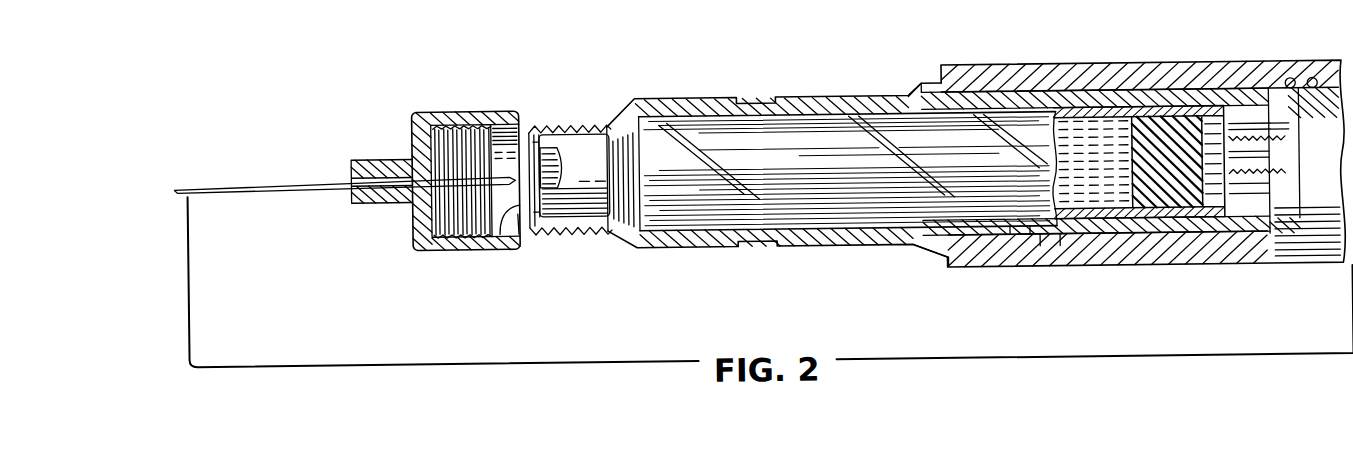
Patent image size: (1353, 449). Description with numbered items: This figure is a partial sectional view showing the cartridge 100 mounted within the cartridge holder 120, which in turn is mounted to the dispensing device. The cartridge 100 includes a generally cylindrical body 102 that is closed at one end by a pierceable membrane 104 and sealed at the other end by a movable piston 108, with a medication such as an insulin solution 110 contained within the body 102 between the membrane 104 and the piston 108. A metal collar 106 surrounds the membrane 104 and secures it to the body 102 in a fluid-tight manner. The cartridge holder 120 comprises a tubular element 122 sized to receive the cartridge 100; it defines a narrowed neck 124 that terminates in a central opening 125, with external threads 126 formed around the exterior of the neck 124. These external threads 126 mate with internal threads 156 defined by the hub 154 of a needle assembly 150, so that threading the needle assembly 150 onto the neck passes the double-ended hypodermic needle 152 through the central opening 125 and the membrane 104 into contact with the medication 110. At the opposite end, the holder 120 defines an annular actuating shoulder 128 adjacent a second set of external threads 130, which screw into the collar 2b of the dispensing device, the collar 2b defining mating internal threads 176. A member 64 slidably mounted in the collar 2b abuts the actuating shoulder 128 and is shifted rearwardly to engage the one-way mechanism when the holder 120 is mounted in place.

The double-ended hypodermic needle 152 is at (257, 179).
The needle assembly 150 is at (374, 202).
The hub 154 is at (413, 133).
The internal threads 156 is at (465, 122).
The central opening 125 is at (516, 194).
The external threads 126 is at (558, 234).
The narrowed neck 124 is at (596, 232).
The collar 106 is at (590, 142).
The pierceable membrane 104 is at (552, 138).
The tubular element 122 is at (695, 242).
The body 102 is at (706, 124).
The cartridge 100 is at (900, 172).
The cartridge holder 120 is at (837, 94).
The collar 2b is at (975, 70).
The annular actuating shoulder 128 is at (1110, 243).
The external threads 130 is at (1014, 246).
The internal threads 176 is at (1045, 261).
The insulin solution 110 is at (1105, 145).
The movable piston 108 is at (1190, 126).
The member 64 is at (1193, 266).